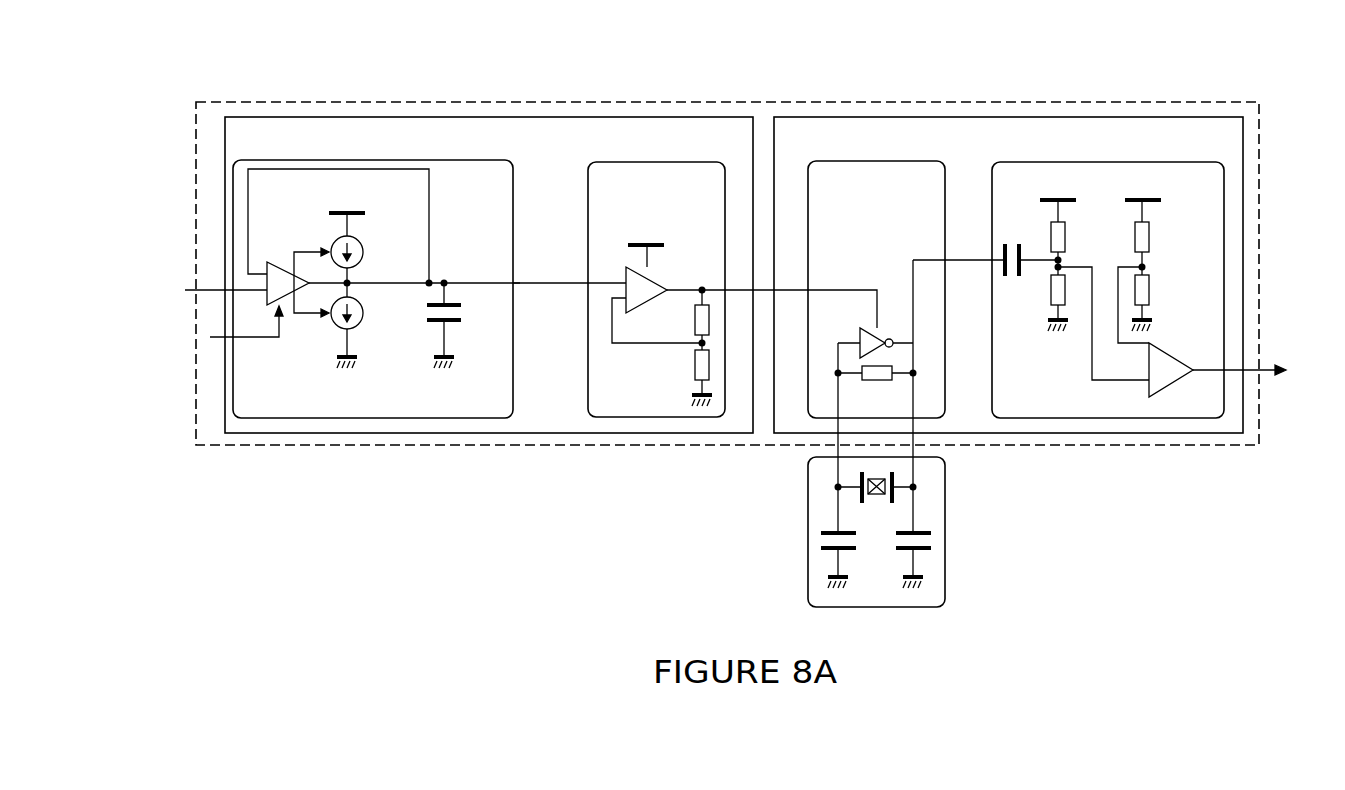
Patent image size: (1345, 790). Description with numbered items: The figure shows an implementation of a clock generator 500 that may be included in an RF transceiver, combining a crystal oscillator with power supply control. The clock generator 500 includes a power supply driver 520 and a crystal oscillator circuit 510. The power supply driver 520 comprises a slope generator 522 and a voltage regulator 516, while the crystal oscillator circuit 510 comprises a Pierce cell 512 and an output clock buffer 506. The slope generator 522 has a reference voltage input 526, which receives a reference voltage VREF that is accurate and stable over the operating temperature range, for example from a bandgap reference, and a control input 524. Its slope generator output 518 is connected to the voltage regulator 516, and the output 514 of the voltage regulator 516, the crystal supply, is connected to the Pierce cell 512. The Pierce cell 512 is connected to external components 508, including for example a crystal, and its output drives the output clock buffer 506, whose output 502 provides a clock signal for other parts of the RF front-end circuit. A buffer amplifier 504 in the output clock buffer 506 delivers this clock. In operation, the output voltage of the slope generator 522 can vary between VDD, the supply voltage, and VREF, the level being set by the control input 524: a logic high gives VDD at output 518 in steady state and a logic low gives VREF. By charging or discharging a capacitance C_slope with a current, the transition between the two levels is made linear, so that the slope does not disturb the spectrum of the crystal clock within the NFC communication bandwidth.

The clock generator 500 is at (1260, 192).
The output of the clock buffer 502 is at (1265, 370).
The output buffer amplifier 504 is at (1143, 383).
The output clock buffer 506 is at (1040, 418).
The external components 508 is at (945, 540).
The crystal oscillator circuit 510 is at (1243, 243).
The Pierce cell 512 is at (808, 408).
The output of the voltage regulator 514 is at (752, 292).
The voltage regulator 516 is at (588, 370).
The slope generator output 518 is at (519, 282).
The power supply driver 520 is at (373, 433).
The slope generator 522 is at (278, 418).
The control input 524 is at (215, 342).
The reference voltage input 526 is at (217, 288).